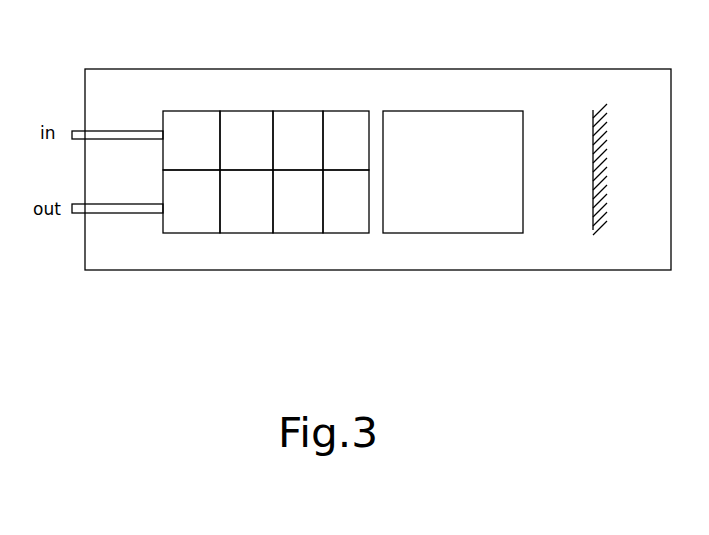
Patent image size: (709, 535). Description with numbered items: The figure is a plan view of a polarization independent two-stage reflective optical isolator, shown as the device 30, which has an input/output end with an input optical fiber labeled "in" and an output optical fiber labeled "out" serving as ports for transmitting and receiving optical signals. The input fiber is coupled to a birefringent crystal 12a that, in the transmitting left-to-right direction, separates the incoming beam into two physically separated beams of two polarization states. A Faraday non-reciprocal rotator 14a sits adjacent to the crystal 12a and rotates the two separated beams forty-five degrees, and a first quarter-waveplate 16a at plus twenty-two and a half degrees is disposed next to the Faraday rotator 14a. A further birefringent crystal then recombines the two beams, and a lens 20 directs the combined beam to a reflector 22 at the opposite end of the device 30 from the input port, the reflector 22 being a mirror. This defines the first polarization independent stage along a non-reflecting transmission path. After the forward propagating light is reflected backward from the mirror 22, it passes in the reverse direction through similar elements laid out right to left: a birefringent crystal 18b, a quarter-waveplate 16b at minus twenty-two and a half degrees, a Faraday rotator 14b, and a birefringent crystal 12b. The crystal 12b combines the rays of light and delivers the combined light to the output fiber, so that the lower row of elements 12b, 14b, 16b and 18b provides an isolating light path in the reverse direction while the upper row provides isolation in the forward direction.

The device 30 is at (347, 69).
The birefringent crystal 12a is at (178, 111).
The Faraday rotator 14a is at (237, 111).
The first quarter-waveplate 16a is at (297, 111).
The birefringent crystal 12b is at (200, 233).
The Faraday rotator 14b is at (263, 233).
The quarter-waveplate 16b is at (312, 233).
The birefringent crystal 18b is at (352, 233).
The lens 20 is at (443, 233).
The reflector 22 is at (593, 230).